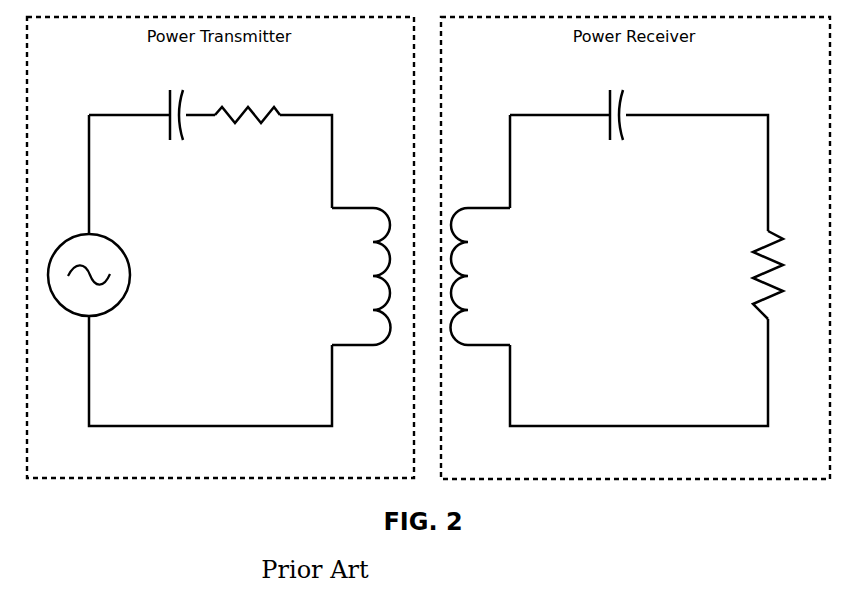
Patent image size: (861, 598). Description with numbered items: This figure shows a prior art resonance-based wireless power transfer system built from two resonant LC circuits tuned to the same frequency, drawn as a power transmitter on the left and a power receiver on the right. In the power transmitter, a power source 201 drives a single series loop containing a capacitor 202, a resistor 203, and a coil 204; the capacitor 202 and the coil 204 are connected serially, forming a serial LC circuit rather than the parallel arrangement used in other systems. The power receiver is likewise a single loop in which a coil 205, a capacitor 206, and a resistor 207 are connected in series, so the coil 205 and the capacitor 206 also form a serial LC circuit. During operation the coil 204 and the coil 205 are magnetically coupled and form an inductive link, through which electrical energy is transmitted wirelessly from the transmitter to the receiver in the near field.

The power source 201 is at (89, 275).
The capacitor 202 is at (165, 127).
The resistor 203 is at (247, 127).
The coil 204 is at (361, 276).
The coil 205 is at (481, 276).
The capacitor 206 is at (612, 127).
The resistor 207 is at (742, 275).